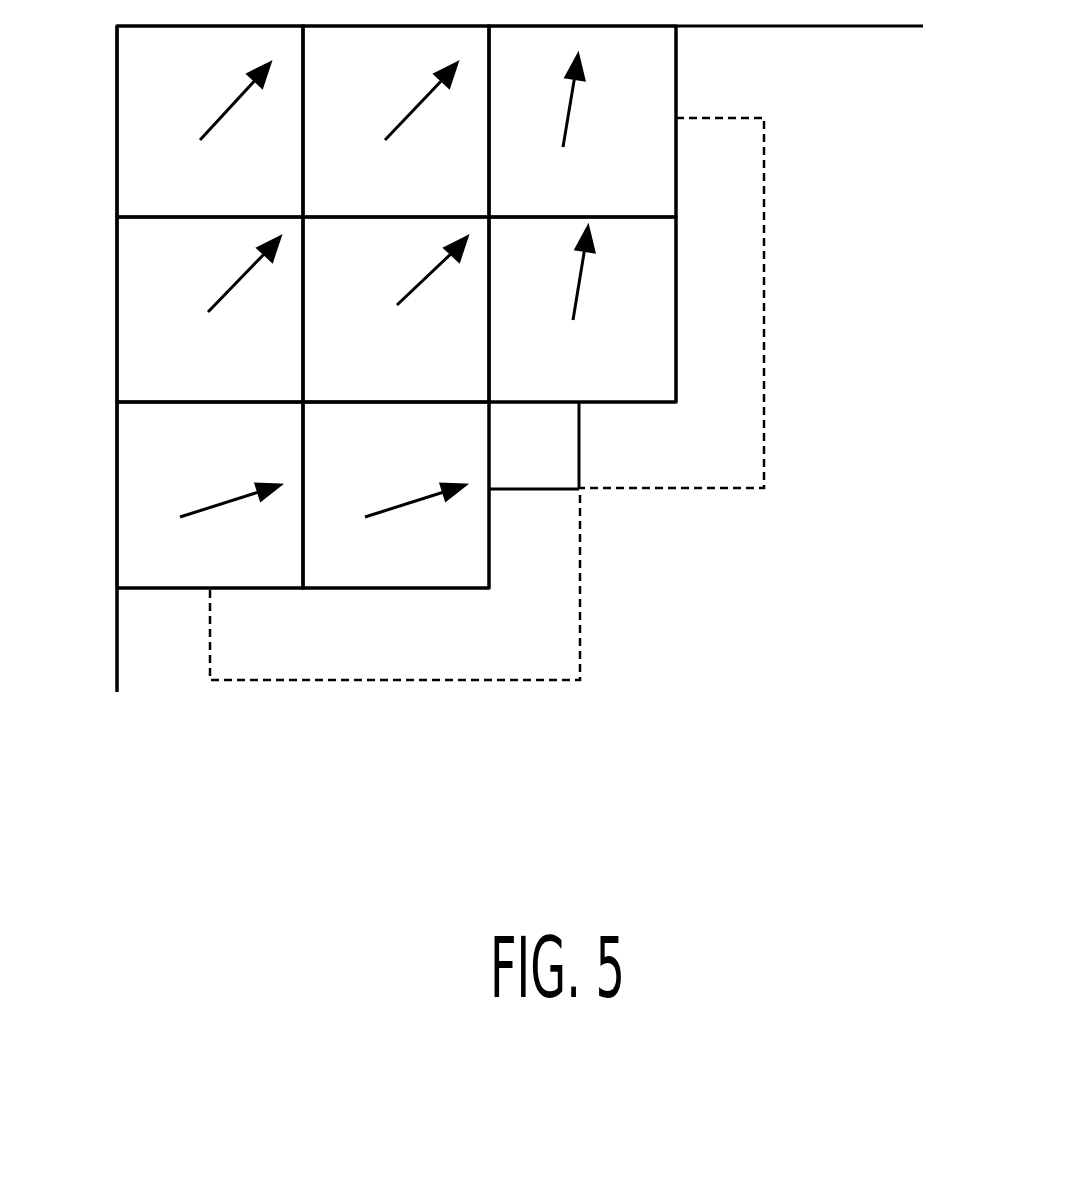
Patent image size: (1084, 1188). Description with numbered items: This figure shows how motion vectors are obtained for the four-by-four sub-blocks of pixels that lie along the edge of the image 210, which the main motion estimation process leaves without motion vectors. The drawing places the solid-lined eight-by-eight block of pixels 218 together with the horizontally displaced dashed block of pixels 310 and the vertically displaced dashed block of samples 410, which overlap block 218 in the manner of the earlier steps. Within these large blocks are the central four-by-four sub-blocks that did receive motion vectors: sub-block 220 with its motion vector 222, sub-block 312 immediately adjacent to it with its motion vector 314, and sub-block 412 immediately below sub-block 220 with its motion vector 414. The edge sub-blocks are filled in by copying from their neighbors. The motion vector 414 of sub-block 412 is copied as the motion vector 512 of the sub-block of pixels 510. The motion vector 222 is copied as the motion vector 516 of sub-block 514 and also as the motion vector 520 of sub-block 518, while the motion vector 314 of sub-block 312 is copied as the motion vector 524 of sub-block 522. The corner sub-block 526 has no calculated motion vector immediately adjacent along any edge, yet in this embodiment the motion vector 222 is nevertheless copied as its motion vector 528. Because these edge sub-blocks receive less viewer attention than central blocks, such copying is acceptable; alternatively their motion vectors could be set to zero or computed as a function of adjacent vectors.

The image 210 is at (115, 548).
The block of pixels 218 is at (580, 492).
The block of pixels 310 is at (763, 205).
The block of samples 410 is at (485, 680).
The sub-block 526 is at (183, 198).
The motion vector 528 is at (217, 123).
The sub-block 518 is at (358, 198).
The motion vector 520 is at (401, 121).
The sub-block 522 is at (546, 198).
The motion vector 524 is at (573, 110).
The sub-block 514 is at (183, 387).
The motion vector 516 is at (228, 295).
The sub-block of pixels 220 is at (360, 387).
The motion vector 222 is at (415, 292).
The sub-block 312 is at (548, 383).
The motion vector 314 is at (582, 282).
The sub-block of pixels 510 is at (225, 581).
The motion vector 512 is at (218, 502).
The sub-block 412 is at (411, 581).
The motion vector 414 is at (403, 500).